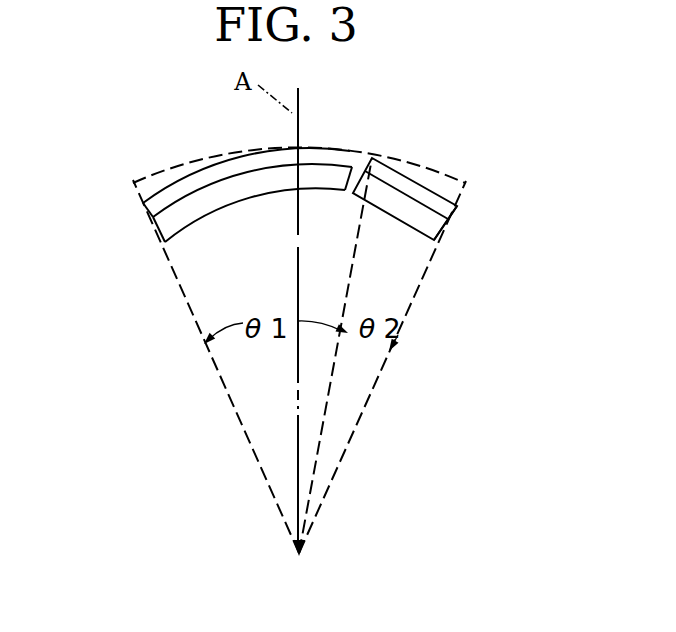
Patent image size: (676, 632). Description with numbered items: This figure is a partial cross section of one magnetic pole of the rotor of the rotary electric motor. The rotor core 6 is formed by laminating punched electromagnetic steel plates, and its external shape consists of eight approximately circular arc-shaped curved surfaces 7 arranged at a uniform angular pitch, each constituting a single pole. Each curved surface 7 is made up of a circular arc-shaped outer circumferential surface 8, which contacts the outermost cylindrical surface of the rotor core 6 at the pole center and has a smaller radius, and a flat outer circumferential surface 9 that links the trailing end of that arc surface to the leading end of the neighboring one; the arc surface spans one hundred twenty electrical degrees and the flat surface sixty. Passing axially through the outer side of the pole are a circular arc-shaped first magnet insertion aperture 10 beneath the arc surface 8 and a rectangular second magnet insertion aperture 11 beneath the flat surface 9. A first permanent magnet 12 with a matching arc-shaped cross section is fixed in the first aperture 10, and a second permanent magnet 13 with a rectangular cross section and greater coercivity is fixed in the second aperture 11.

The rotor core 6 is at (148, 194).
The approximately circular arc-shaped curved surface 7 is at (385, 92).
The circular arc-shaped outer circumferential surface 8 is at (337, 150).
The flat outer circumferential surface 9 is at (430, 194).
The first magnet insertion aperture 10 is at (250, 163).
The second magnet insertion aperture 11 is at (440, 218).
The first permanent magnet 12 is at (197, 193).
The second permanent magnet 13 is at (452, 208).